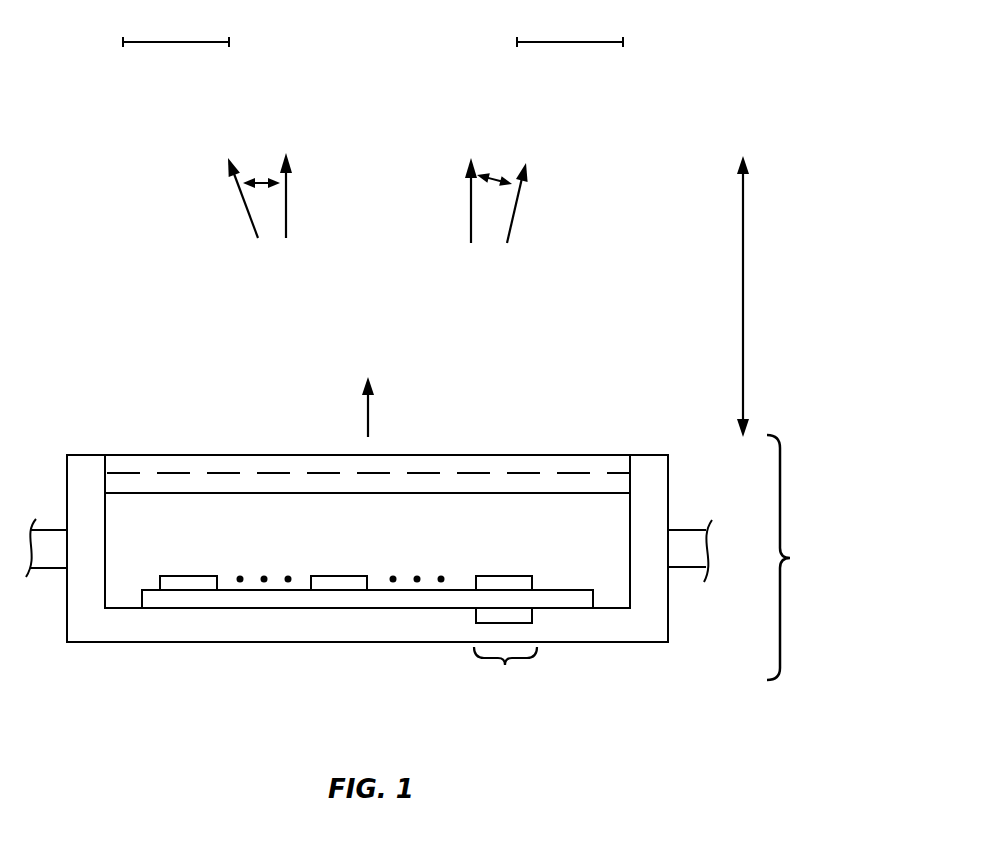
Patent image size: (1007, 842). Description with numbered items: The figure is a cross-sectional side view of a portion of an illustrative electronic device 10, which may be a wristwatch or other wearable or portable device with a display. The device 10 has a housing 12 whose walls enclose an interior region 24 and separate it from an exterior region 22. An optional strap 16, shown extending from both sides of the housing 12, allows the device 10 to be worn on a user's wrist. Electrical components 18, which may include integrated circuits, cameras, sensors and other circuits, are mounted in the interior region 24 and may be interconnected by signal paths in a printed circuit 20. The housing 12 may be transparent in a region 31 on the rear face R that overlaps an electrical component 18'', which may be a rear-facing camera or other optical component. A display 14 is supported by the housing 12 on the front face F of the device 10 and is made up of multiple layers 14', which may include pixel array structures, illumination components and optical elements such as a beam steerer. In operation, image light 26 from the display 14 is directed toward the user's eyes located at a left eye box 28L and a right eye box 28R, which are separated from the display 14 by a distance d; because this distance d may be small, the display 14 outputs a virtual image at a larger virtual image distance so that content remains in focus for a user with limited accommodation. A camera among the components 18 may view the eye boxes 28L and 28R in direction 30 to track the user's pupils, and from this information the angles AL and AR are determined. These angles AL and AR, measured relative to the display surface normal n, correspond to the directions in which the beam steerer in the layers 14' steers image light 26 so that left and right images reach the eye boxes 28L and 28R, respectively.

The device 10 is at (795, 557).
The housing 12 is at (660, 493).
The display 14 is at (394, 444).
The layers 14' is at (363, 444).
The strap 16 is at (50, 562).
The electrical components 18 is at (346, 551).
The electrical component 18'' is at (538, 638).
The printed circuit 20 is at (335, 608).
The exterior region 22 is at (598, 297).
The interior region 24 is at (123, 597).
The image light 26 is at (247, 217).
The eye box 28L is at (229, 42).
The eye box 28R is at (623, 42).
The direction 30 is at (368, 412).
The region 31 is at (505, 674).
The angle AL is at (258, 180).
The angle AR is at (495, 176).
The display surface normal n is at (378, 193).
The distance d is at (752, 296).
The front face F is at (168, 360).
The rear face R is at (426, 701).